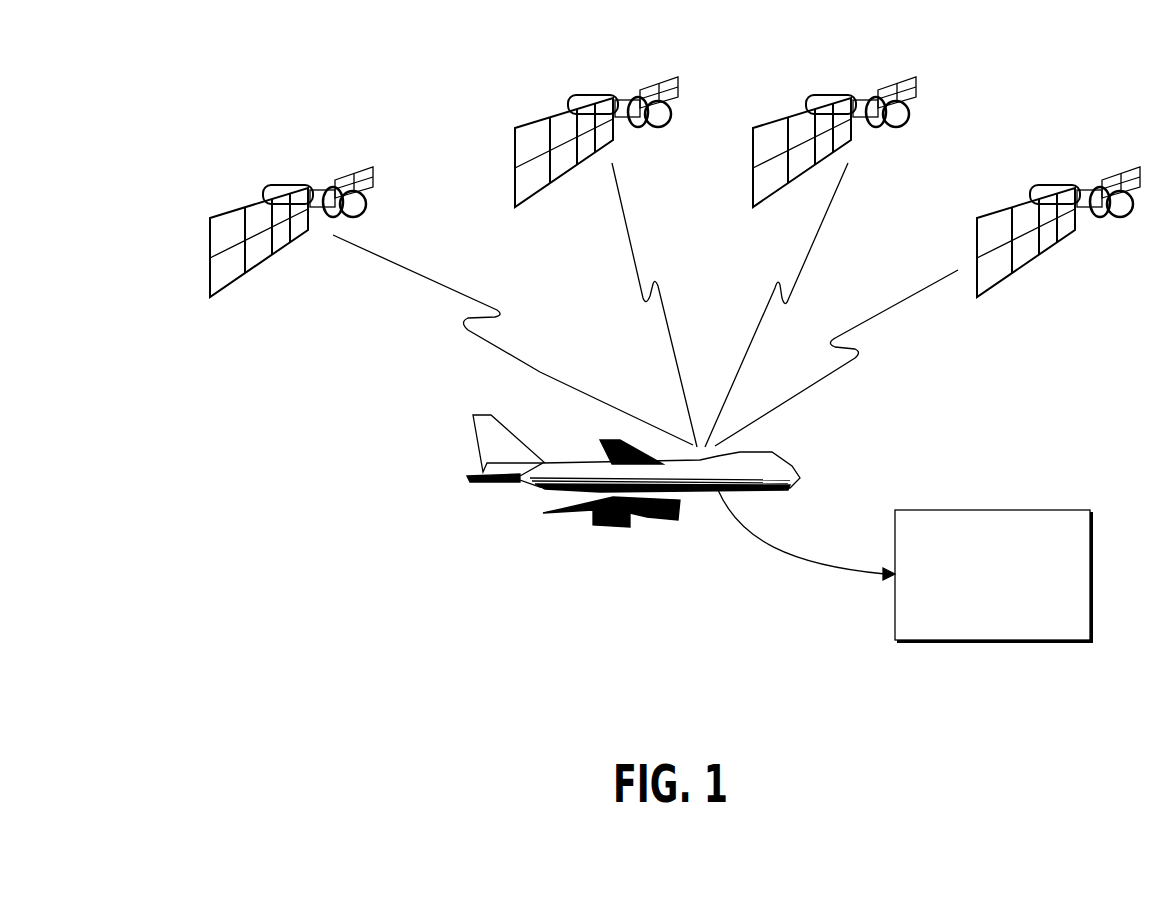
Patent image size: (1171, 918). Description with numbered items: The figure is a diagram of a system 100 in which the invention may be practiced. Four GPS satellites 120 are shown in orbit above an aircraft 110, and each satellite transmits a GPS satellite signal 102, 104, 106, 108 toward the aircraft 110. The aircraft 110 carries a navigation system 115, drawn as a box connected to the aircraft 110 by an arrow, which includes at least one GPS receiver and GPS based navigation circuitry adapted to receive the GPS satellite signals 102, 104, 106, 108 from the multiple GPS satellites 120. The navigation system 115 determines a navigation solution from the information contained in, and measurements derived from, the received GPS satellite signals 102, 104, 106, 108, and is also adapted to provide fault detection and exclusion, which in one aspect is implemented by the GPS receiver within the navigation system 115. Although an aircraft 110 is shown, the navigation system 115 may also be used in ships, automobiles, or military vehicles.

The system 100 is at (422, 602).
The GPS satellite signal 102 is at (447, 282).
The GPS satellite signal 104 is at (633, 243).
The GPS satellite signal 106 is at (815, 243).
The GPS satellite signal 108 is at (928, 283).
The aircraft 110 is at (497, 437).
The navigation system 115 is at (994, 576).
The GPS satellites 120 is at (293, 185).